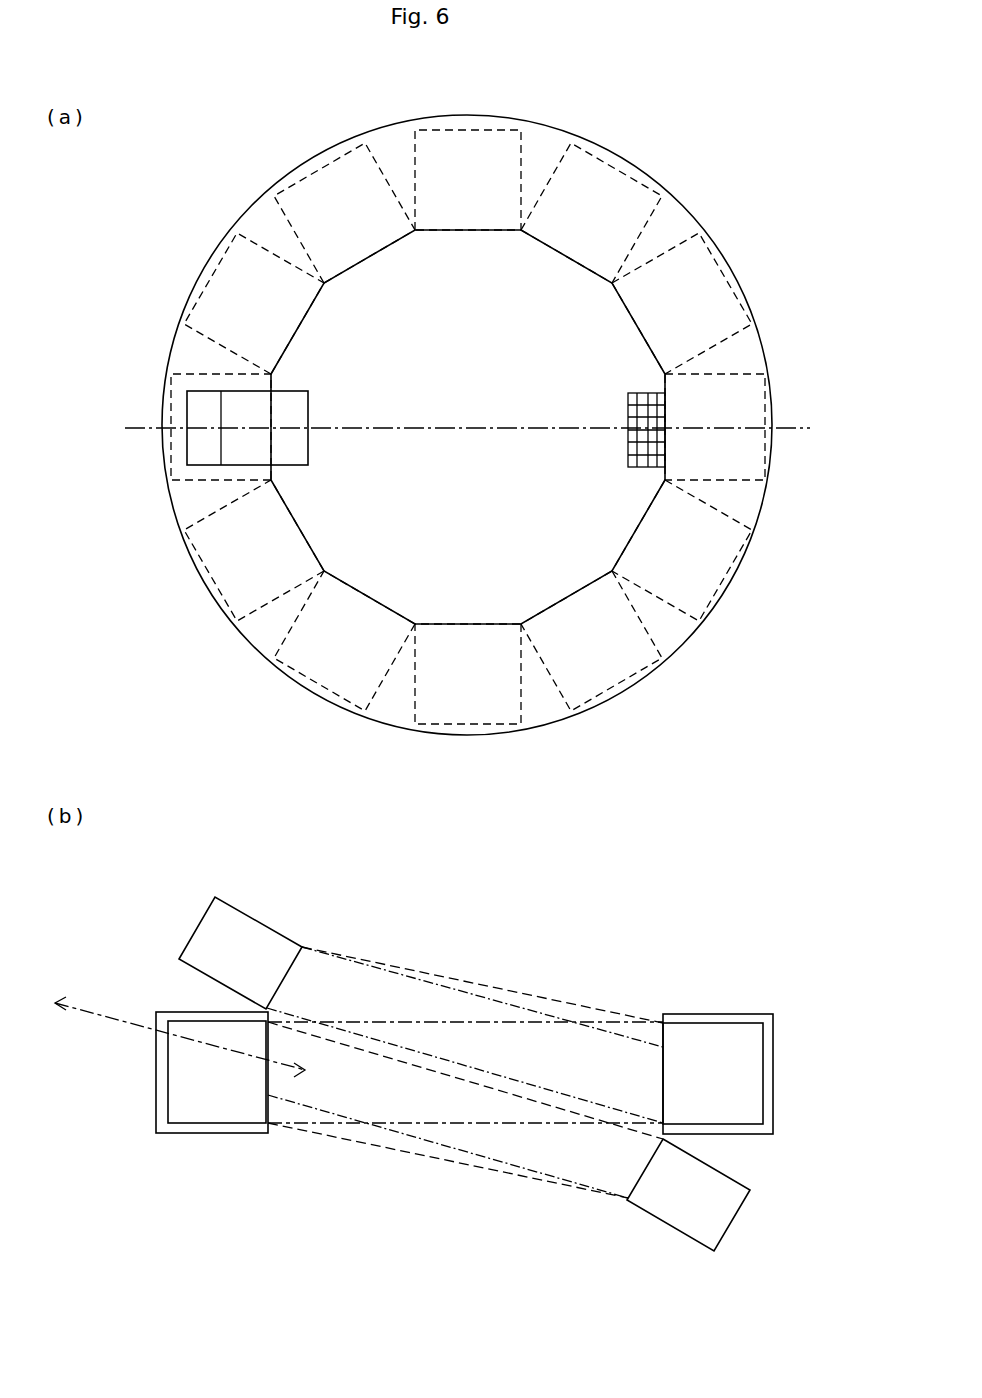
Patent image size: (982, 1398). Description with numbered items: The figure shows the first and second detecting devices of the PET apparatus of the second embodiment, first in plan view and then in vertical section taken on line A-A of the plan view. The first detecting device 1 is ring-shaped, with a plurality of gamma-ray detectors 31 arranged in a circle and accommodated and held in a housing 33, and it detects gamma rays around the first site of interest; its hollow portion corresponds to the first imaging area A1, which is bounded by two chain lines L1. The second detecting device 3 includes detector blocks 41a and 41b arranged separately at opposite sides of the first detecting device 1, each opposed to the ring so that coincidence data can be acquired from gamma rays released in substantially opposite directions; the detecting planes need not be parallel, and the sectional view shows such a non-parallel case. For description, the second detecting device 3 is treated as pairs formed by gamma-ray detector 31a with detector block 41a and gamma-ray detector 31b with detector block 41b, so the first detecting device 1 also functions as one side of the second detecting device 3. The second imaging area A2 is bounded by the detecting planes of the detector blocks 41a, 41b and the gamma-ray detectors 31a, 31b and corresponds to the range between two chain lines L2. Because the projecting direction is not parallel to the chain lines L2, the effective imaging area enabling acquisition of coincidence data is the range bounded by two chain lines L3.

The first detecting device 1 is at (767, 166).
The second detecting device 3 is at (118, 838).
The gamma-ray detector 31 is at (440, 427).
The gamma-ray detector 31a is at (694, 1090).
The gamma-ray detector 31b is at (192, 1089).
The housing 33 is at (724, 1014).
The detector block 41a is at (309, 405).
The detector block 41b is at (628, 407).
The section line A- A is at (136, 432).
The first imaging area A1 is at (583, 1074).
The second imaging area A2 is at (305, 995).
The chain line L1 is at (607, 1022).
The chain line L2 is at (462, 982).
The chain line L3 is at (495, 1000).